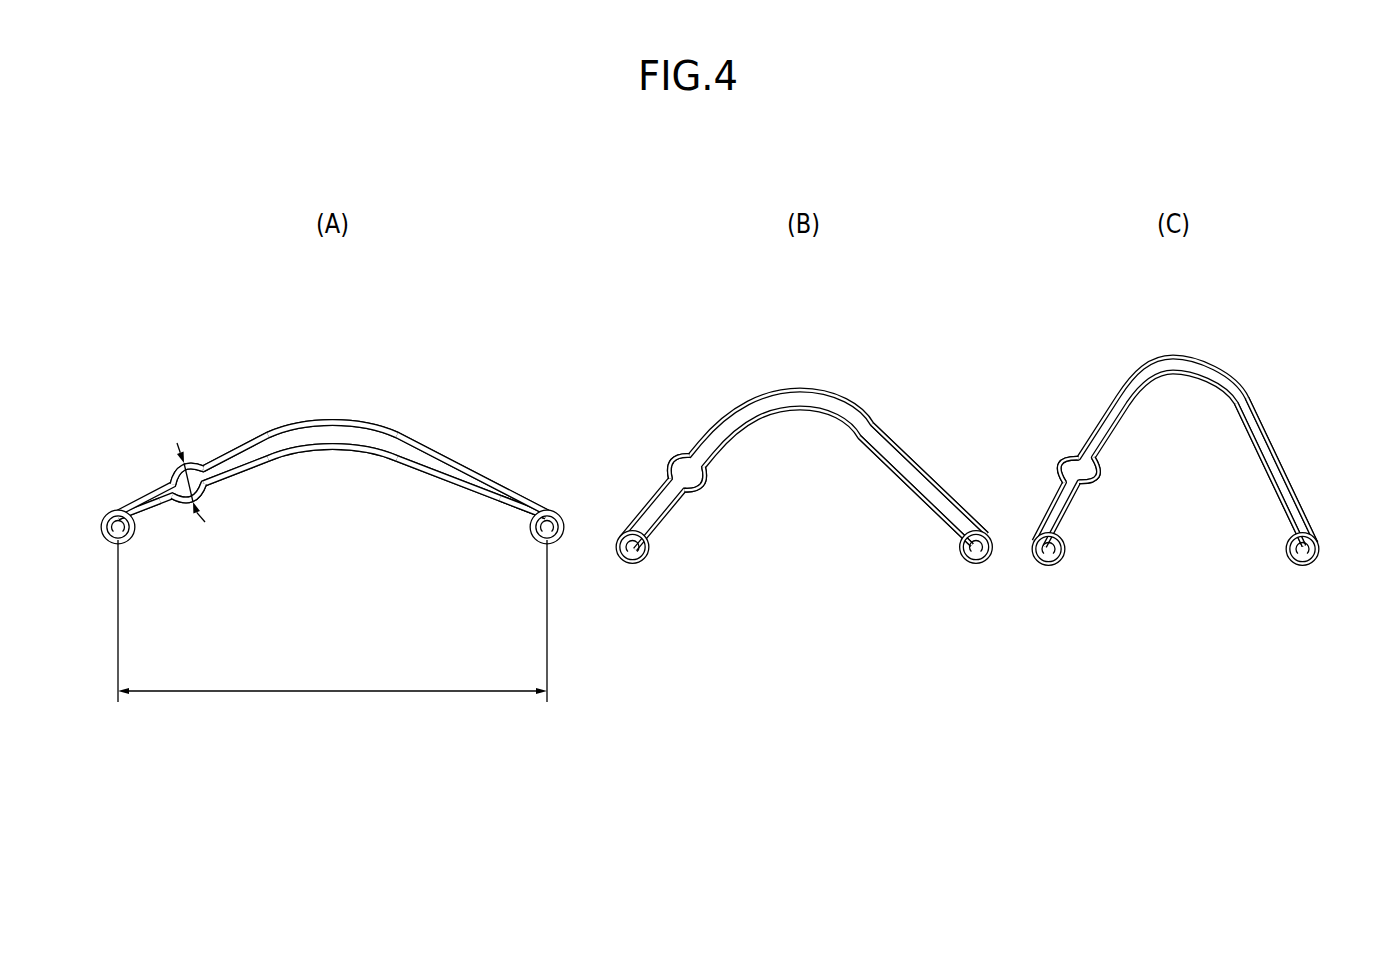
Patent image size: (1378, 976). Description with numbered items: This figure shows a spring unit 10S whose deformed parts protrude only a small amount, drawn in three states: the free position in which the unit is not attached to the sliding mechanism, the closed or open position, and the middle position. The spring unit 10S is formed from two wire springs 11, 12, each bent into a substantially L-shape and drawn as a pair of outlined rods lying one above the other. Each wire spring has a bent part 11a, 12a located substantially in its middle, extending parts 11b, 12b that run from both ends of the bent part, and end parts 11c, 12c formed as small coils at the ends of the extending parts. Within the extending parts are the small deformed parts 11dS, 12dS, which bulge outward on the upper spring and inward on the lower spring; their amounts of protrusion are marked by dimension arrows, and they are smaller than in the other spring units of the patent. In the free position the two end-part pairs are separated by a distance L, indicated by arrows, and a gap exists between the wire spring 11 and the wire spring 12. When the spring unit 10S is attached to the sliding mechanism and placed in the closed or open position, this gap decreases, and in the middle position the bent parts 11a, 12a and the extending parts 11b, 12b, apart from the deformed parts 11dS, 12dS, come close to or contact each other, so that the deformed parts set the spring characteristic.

The spring unit 10S is at (504, 285).
The wire spring 11 is at (707, 458).
The bent part 11a is at (336, 418).
The extending part 11b is at (263, 436).
The end part 11c is at (106, 540).
The small deformed part 11dS is at (172, 468).
The wire spring 12 is at (699, 490).
The bent part 12a is at (338, 452).
The extending part 12b is at (270, 463).
The end part 12c is at (107, 512).
The small deformed part 12dS is at (183, 500).
The distance L is at (332, 621).